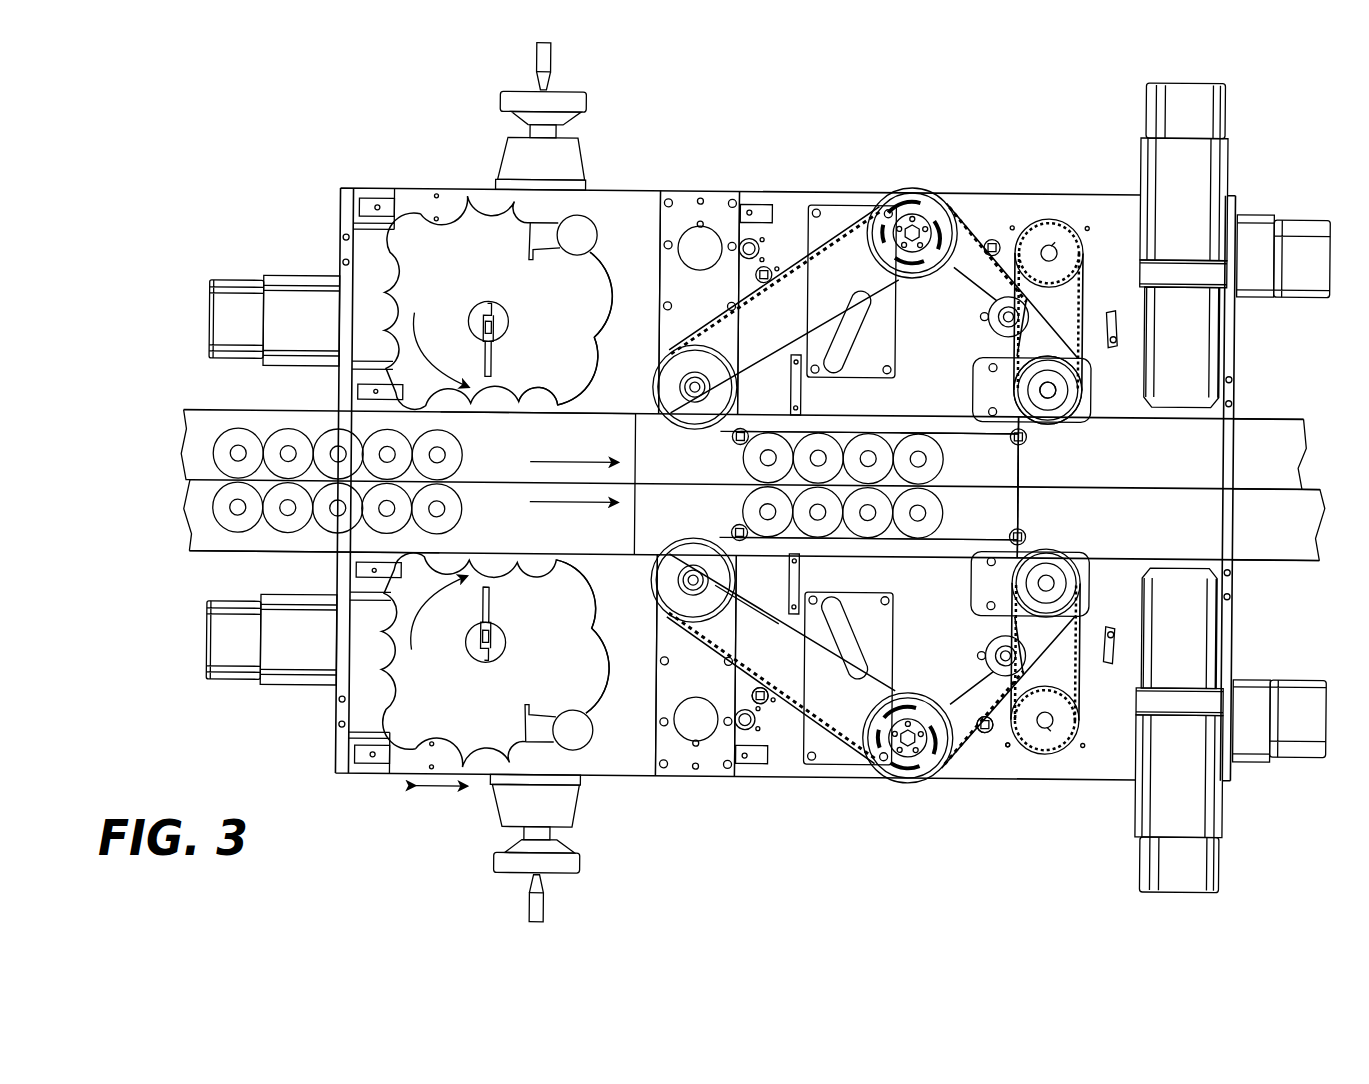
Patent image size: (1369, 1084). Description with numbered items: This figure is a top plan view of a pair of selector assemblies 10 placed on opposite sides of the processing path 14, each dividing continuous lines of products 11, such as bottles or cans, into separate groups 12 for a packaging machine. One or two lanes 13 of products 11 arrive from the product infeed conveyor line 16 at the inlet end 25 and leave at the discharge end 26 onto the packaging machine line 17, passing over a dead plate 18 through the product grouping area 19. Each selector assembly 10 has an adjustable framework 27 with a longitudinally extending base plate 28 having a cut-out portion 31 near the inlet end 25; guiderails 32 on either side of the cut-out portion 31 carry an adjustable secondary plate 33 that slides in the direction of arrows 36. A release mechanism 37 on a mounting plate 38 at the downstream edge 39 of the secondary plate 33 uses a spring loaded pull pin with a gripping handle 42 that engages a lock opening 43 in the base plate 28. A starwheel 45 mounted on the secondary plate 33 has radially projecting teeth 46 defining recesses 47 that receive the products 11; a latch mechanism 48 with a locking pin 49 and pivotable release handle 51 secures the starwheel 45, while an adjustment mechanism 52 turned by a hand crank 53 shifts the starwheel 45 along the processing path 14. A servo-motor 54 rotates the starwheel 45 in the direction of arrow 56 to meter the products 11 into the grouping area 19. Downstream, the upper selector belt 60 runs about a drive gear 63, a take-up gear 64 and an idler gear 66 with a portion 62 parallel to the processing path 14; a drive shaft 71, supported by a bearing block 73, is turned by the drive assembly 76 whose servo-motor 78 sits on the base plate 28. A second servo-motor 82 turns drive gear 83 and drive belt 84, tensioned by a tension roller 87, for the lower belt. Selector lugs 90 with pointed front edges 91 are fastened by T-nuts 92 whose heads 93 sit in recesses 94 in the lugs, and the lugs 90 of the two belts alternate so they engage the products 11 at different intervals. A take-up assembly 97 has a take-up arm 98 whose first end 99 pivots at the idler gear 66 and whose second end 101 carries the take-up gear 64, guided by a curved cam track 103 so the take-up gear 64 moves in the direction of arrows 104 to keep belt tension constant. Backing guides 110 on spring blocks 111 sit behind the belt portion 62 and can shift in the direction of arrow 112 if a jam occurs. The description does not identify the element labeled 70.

The selector assembly 10 is at (798, 132).
The products 11 is at (215, 506).
The groups of products 12 is at (862, 428).
The lanes 13 is at (200, 410).
The processing path 14 is at (585, 458).
The product infeed conveyor line 16 is at (525, 411).
The packaging machine line 17 is at (1262, 412).
The dead plate 18 is at (993, 455).
The product grouping area 19 is at (960, 575).
The inlet end 25 is at (318, 540).
The discharge end 26 is at (1215, 470).
The adjustable framework 27 is at (432, 184).
The base plate 28 is at (783, 218).
The cut-out portion 31 is at (362, 238).
The guiderails 32 is at (378, 205).
The secondary plate 33 is at (610, 264).
The arrows 36 is at (438, 805).
The release mechanism 37 is at (695, 220).
The mounting plate 38 is at (678, 306).
The downstream edge 39 is at (656, 200).
The gripping handle 42 is at (608, 290).
The lock opening 43 is at (750, 204).
The starwheel 45 is at (530, 315).
The teeth 46 is at (568, 240).
The bottle receiving recesses 47 is at (526, 250).
The latch mechanism 48 is at (498, 330).
The locking pin 49 is at (487, 306).
The pivotable release handle 51 is at (490, 604).
The adjustment mechanism 52 is at (562, 830).
The hand crank 53 is at (560, 882).
The servo-motor 54 is at (300, 295).
The arrow 56 is at (440, 481).
The upper selector belt 60 is at (982, 730).
The portion of selector belt 62 is at (948, 420).
The drive gear 63 is at (1076, 388).
The take-up gear 64 is at (916, 182).
The idler gear 66 is at (590, 410).
The pulley 70 is at (1034, 374).
The drive shaft 71 is at (1052, 392).
The bearing block 73 is at (995, 591).
The drive assembly 76 is at (1092, 285).
The servo-motor 78 is at (1162, 170).
The servo-motor 82 is at (1295, 290).
The drive gear 83 is at (1042, 240).
The drive belt 84 is at (1074, 678).
The tension roller 87 is at (986, 653).
The selector lugs 90 is at (989, 234).
The pointed front edge 91 is at (753, 690).
The T-nut 92 is at (770, 688).
The head 93 is at (985, 711).
The recess 94 is at (1020, 748).
The take-up assembly 97 is at (853, 222).
The take-up arm 98 is at (800, 311).
The first end 99 is at (700, 372).
The second end 101 is at (892, 225).
The curved cam track 103 is at (845, 325).
The arrows 104 is at (868, 812).
The backing guides 110 is at (920, 426).
The spring blocks 111 is at (793, 380).
The arrow 112 is at (915, 414).